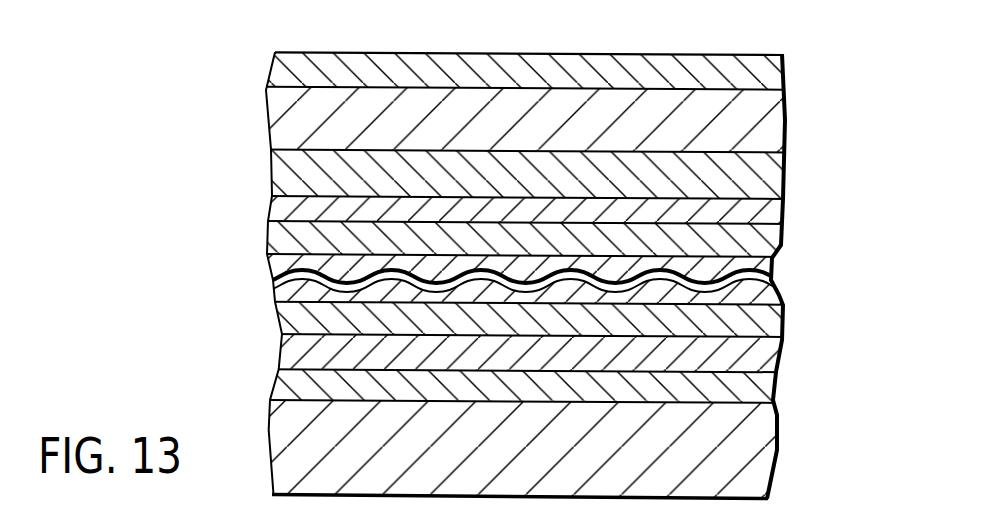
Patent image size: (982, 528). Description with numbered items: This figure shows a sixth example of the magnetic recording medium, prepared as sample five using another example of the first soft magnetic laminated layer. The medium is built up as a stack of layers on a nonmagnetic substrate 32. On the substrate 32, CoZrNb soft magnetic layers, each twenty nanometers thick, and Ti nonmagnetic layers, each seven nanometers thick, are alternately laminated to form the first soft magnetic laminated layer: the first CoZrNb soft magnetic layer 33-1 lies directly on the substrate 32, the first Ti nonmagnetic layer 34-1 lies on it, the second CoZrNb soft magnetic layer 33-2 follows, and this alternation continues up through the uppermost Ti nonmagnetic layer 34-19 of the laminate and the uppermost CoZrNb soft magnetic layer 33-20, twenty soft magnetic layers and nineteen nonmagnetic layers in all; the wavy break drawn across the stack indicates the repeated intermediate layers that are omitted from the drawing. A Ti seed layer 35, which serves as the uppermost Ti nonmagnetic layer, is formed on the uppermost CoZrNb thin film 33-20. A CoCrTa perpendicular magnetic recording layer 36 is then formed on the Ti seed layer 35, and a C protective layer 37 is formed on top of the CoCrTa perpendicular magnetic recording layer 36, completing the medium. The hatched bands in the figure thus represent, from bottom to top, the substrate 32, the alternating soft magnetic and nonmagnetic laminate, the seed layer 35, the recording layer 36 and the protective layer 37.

The C protective layer 37 is at (767, 72).
The CoCrTa perpendicular magnetic recording layer 36 is at (767, 128).
The Ti seed layer 35 is at (765, 175).
The CoZrNb soft magnetic layer 33-20 is at (763, 213).
The Ti nonmagnetic layer 34-19 is at (763, 240).
The CoZrNb soft magnetic layer 33-2 is at (763, 323).
The Ti nonmagnetic layer 34-1 is at (762, 358).
The CoZrNb soft magnetic layer 33-1 is at (762, 387).
The nonmagnetic substrate 32 is at (763, 447).